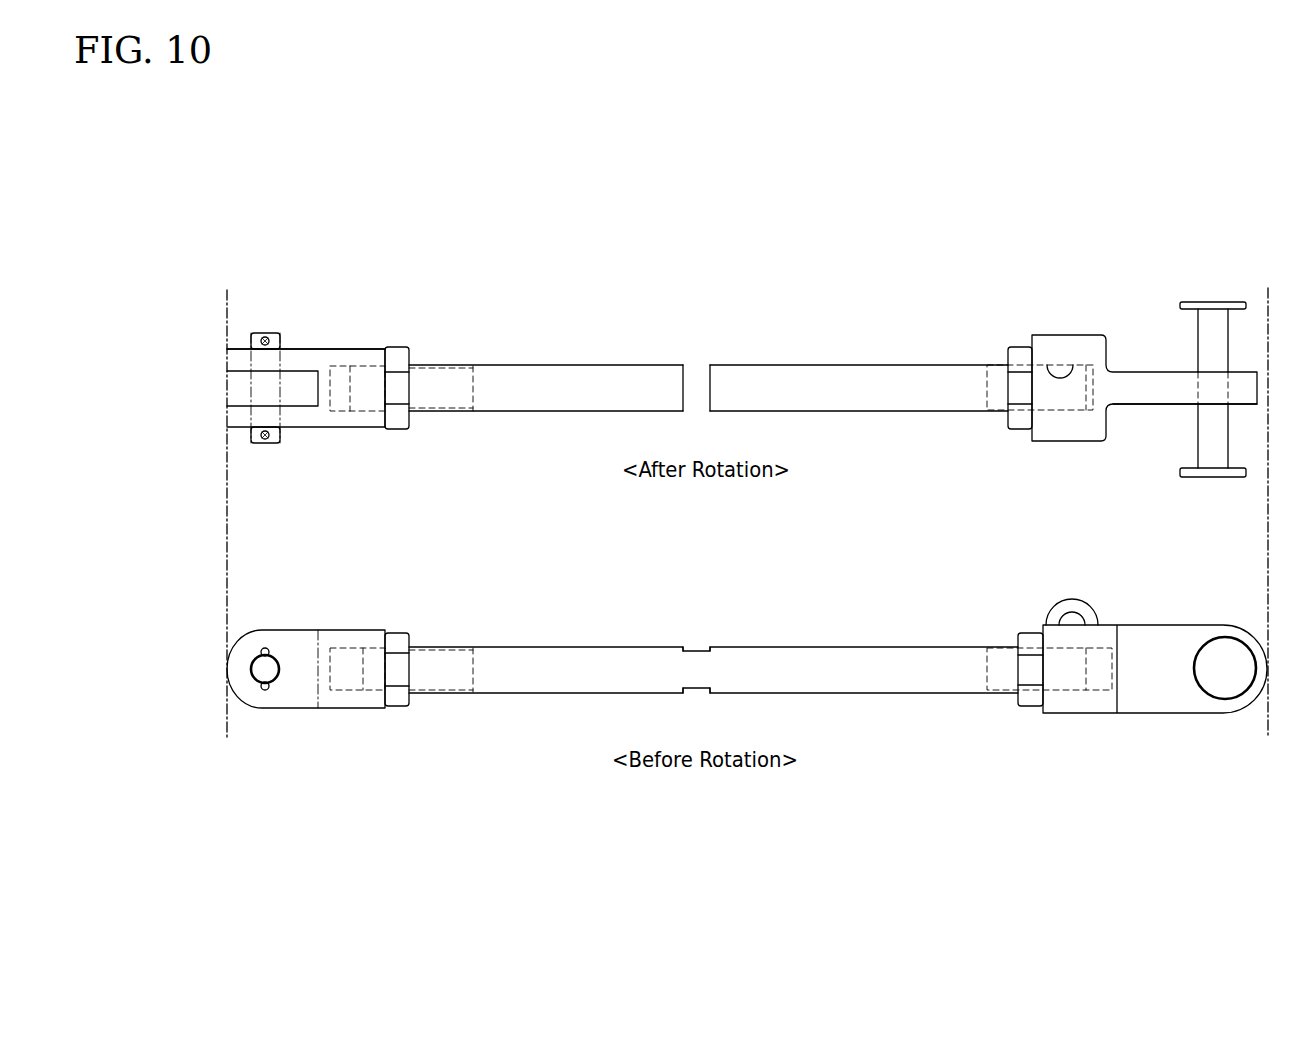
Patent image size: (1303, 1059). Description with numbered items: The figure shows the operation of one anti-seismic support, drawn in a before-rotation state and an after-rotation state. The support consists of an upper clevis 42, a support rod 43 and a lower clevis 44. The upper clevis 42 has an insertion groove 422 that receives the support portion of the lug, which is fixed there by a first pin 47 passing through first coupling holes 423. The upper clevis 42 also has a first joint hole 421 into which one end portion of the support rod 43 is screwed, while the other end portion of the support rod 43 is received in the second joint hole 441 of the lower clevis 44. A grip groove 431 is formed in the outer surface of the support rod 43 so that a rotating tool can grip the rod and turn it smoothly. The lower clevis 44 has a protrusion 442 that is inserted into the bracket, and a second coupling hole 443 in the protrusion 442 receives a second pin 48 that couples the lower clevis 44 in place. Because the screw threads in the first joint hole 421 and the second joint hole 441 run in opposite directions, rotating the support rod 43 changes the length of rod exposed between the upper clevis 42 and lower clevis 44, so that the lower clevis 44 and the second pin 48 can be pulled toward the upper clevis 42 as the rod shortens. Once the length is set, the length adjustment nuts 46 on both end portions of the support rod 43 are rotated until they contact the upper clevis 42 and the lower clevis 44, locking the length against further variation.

The upper clevis 42 is at (305, 415).
The first joint hole 421 is at (365, 369).
The insertion groove 422 is at (227, 372).
The first coupling holes 423 is at (276, 360).
The support rod 43 is at (603, 365).
The grip groove 431 is at (698, 365).
The lower clevis 44 is at (1073, 443).
The second joint hole 441 is at (1068, 358).
The protrusion 442 is at (1150, 407).
The second coupling hole 443 is at (1197, 386).
The length adjustment nuts 46 is at (395, 430).
The first pin 47 is at (282, 342).
The second pin 48 is at (1218, 302).